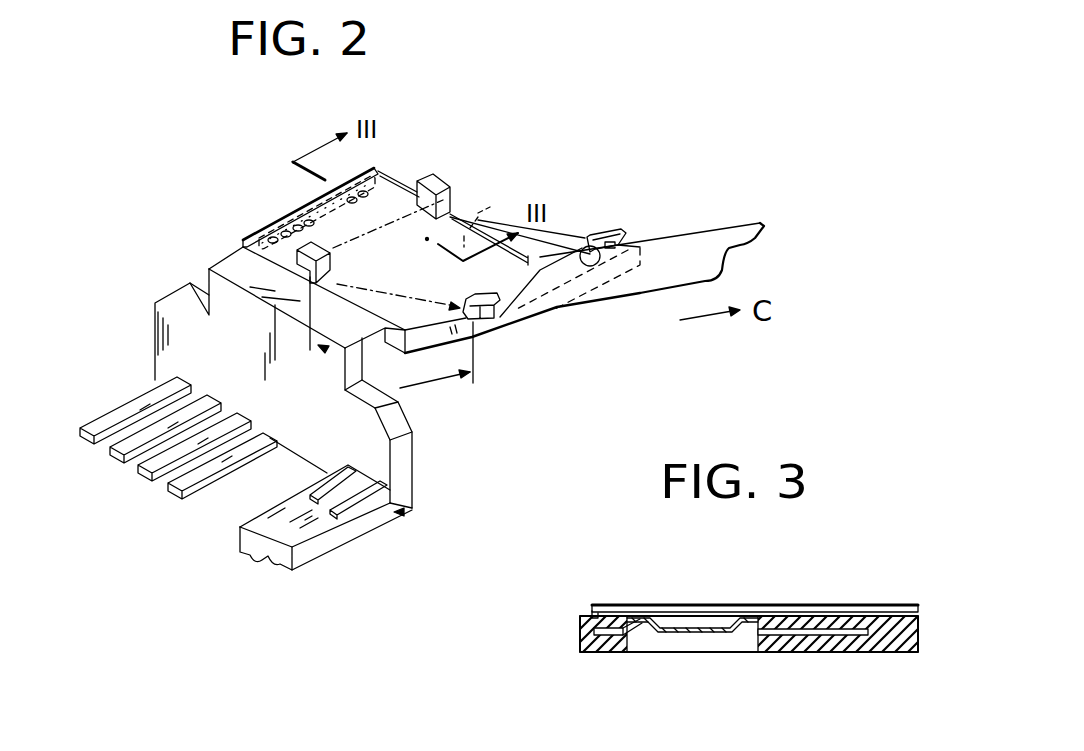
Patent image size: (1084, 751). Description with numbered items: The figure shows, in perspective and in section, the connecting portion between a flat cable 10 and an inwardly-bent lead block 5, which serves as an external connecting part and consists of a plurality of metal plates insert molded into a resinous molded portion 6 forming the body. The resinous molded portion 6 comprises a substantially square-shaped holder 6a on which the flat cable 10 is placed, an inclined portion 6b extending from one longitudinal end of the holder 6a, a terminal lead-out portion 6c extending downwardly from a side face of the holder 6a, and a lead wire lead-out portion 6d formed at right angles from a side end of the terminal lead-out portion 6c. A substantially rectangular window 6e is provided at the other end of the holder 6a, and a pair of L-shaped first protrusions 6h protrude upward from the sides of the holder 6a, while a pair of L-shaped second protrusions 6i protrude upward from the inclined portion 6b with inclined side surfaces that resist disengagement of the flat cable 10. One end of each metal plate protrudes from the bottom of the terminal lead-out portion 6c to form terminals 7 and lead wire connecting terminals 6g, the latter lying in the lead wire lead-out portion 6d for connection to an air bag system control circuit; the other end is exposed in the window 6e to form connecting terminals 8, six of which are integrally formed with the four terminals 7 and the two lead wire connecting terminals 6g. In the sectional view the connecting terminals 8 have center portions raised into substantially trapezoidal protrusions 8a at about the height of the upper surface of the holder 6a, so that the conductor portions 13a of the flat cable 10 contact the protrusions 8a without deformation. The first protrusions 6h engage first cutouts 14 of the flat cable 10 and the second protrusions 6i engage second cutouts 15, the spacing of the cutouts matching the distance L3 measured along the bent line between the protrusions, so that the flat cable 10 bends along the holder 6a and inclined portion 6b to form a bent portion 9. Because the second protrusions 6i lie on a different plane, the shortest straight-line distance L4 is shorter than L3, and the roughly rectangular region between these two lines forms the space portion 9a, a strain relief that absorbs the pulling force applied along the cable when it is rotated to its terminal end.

In FIG. 2, the inwardly-bent lead block 5 is at (200, 256).
In FIG. 2, the resinous molded portion 6 is at (236, 250).
In FIG. 2, the holder 6a is at (478, 217).
In FIG. 3, the holder 6a is at (805, 650).
In FIG. 2, the inclined portion 6b is at (503, 338).
In FIG. 2, the terminal lead-out portion 6c is at (375, 450).
In FIG. 2, the lead wire lead-out portion 6d is at (313, 545).
In FIG. 2, the window 6e is at (313, 200).
In FIG. 3, the window 6e is at (690, 640).
In FIG. 2, the lead wire connecting terminals 6g is at (358, 497).
In FIG. 2, the first protrusions 6h is at (436, 180).
In FIG. 2, the second protrusions 6i is at (628, 229).
In FIG. 2, the terminals 7 is at (115, 417).
In FIG. 2, the connecting terminals 8 is at (280, 215).
In FIG. 3, the connecting terminals 8 is at (866, 636).
In FIG. 3, the protrusions 8a is at (708, 616).
In FIG. 2, the bent portion 9 is at (522, 280).
In FIG. 2, the space portion 9a is at (455, 328).
In FIG. 3, the flat cable 10 is at (901, 603).
In FIG. 3, the conductor portions 13a is at (592, 612).
In FIG. 2, the first cutouts 14 is at (465, 212).
In FIG. 2, the second cutouts 15 is at (583, 246).
In FIG. 2, the distance between first and second protrusions L3 is at (395, 369).
In FIG. 2, the shortest distance L4 is at (344, 278).